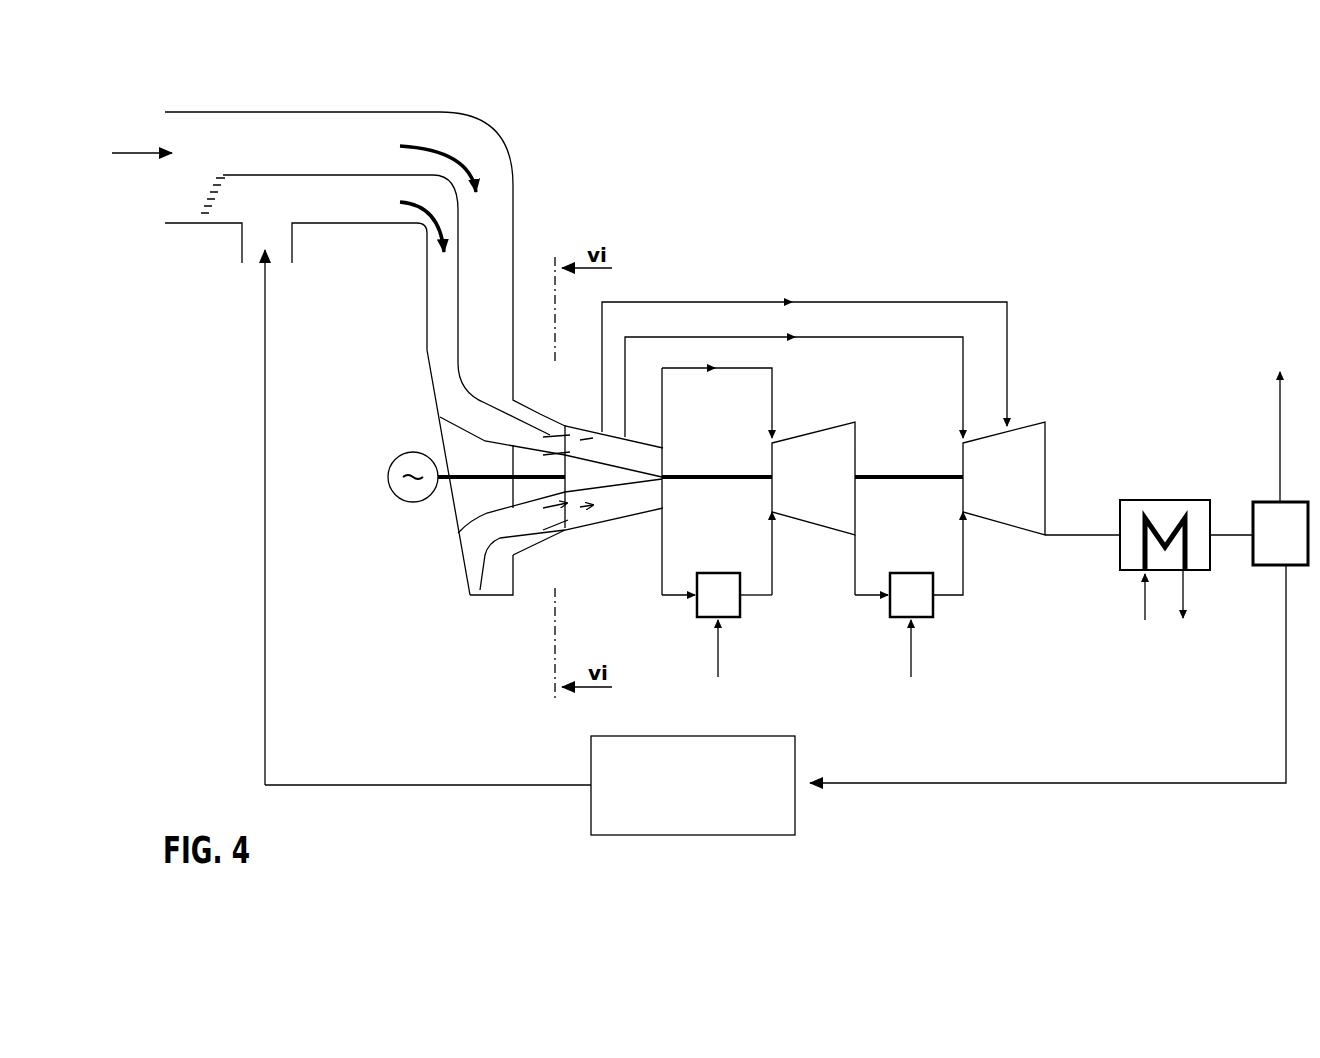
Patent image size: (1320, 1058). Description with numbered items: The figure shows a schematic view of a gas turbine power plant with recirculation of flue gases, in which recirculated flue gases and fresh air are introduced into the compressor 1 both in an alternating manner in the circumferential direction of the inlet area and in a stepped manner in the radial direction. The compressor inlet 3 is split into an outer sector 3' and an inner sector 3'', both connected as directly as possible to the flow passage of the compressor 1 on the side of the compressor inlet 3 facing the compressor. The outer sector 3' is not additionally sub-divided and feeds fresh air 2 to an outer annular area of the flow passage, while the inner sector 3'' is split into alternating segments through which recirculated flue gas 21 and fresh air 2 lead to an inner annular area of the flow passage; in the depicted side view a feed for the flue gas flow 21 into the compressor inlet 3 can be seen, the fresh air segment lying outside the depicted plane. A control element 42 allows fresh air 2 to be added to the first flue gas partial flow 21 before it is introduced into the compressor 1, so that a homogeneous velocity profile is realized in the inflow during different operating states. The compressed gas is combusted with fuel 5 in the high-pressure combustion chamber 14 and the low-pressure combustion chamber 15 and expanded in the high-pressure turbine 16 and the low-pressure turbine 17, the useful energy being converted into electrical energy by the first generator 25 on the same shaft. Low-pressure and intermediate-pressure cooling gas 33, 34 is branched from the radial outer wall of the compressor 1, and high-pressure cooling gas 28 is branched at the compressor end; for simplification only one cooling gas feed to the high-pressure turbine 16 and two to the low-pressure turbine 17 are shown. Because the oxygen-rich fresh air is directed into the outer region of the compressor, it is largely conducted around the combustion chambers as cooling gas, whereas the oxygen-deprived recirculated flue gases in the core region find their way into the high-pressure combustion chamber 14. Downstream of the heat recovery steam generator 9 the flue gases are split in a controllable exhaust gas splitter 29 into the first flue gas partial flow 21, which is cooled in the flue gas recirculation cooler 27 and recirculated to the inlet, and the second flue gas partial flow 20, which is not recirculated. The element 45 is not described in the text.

The compressor 1 is at (611, 523).
The fresh air 2 is at (128, 150).
The compressor inlet 3 is at (414, 353).
The outer sector 3' is at (511, 422).
The inner sector 3'' is at (510, 472).
The fuel 5 is at (814, 665).
The heat recovery steam generator 9 is at (1164, 512).
The high-pressure combustion chamber 14 is at (706, 609).
The low-pressure combustion chamber 15 is at (899, 609).
The high-pressure turbine 16 is at (805, 490).
The low-pressure turbine 17 is at (996, 490).
The second flue gas partial flow 20 is at (1275, 442).
The first flue gas partial flow 21 is at (412, 210).
The first generator 25 is at (413, 488).
The flue gas recirculation cooler 27 is at (677, 801).
The high-pressure cooling gas 28 is at (735, 365).
The exhaust gas splitter 29 is at (1268, 546).
The low-pressure cooling gas 33 is at (925, 302).
The intermediate-pressure cooling gas 34 is at (832, 335).
The control element 42 is at (210, 198).
The intake duct partition 45 is at (455, 298).